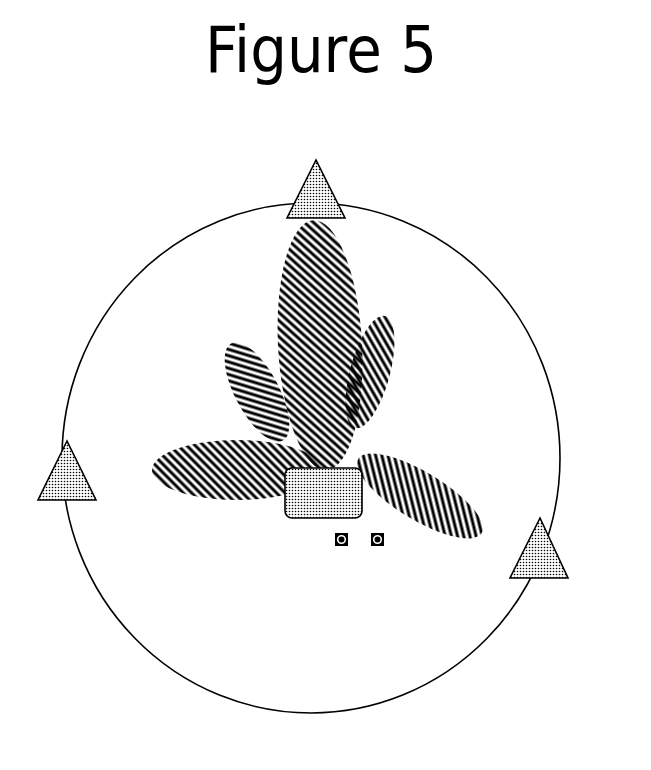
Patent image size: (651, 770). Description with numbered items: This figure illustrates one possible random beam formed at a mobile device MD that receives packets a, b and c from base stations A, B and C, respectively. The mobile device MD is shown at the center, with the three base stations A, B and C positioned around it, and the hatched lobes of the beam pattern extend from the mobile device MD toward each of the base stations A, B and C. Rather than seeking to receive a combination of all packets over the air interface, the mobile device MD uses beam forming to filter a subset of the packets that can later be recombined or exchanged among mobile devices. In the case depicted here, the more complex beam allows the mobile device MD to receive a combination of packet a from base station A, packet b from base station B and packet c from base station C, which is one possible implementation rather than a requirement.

The base station A is at (316, 189).
The base station B is at (67, 472).
The base station C is at (539, 548).
The mobile device MD is at (323, 493).
The packet a is at (320, 538).
The packet b is at (350, 538).
The packet c is at (385, 538).